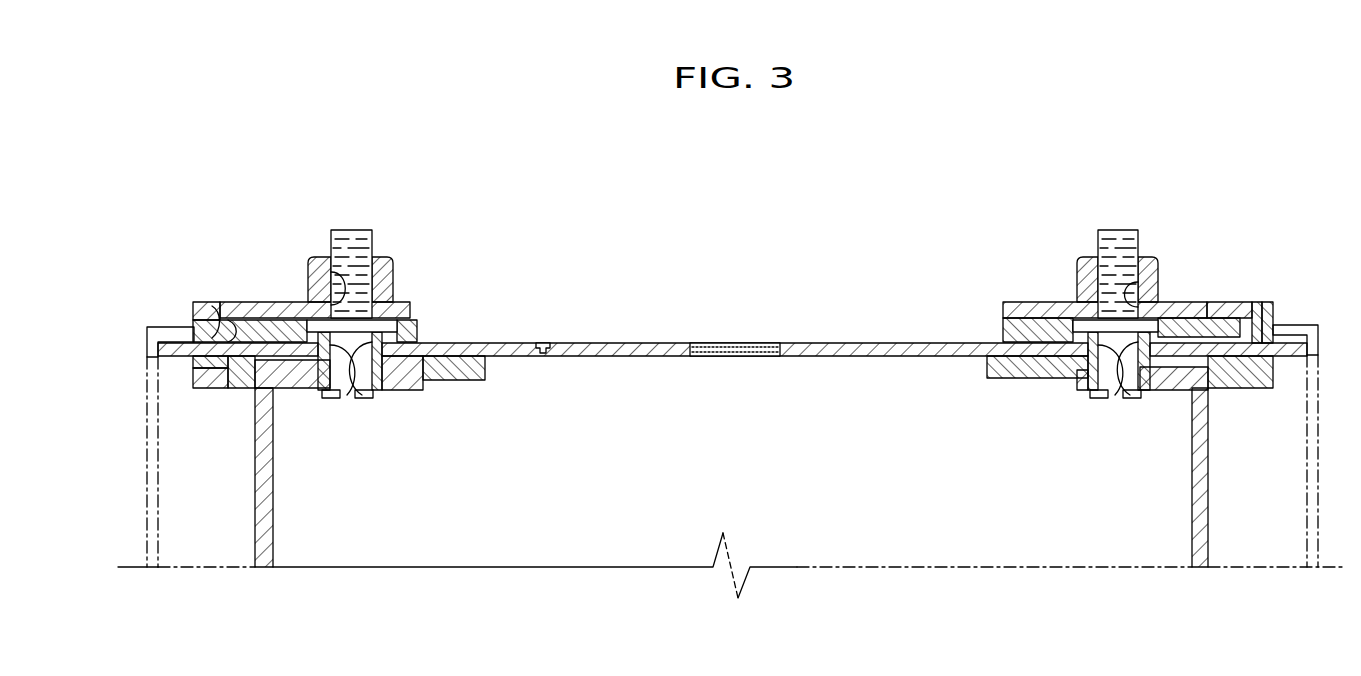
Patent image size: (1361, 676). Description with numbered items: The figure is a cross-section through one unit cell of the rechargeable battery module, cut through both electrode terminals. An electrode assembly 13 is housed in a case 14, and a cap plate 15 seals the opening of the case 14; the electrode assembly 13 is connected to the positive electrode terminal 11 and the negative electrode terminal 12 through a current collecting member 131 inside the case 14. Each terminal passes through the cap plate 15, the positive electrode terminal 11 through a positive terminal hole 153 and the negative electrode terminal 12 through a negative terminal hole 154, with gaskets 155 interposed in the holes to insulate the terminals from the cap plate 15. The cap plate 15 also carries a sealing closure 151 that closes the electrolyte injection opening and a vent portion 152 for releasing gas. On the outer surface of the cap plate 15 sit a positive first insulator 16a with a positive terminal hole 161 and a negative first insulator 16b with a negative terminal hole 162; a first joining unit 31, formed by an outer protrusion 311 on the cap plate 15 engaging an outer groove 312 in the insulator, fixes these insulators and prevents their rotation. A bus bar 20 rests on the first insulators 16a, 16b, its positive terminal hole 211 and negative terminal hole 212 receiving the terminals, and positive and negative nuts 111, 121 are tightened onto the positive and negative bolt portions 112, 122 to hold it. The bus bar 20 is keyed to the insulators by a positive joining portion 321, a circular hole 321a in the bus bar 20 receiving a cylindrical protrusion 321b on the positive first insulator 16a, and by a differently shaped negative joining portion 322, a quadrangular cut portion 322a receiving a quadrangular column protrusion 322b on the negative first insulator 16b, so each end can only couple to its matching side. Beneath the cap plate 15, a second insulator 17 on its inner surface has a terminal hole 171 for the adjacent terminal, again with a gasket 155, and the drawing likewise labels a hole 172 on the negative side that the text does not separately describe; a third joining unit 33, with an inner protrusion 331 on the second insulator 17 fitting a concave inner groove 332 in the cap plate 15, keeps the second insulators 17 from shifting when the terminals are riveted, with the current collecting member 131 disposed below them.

The positive electrode terminal 11 is at (363, 233).
The negative electrode terminal 12 is at (1110, 233).
The electrode assembly 13 is at (730, 504).
The case 14 is at (147, 493).
The cap plate 15 is at (732, 322).
The positive first insulator 16a is at (417, 333).
The negative first insulator 16b is at (1207, 302).
The second insulator 17 is at (237, 388).
The bus bar 20 is at (410, 312).
The first joining unit 31 is at (138, 331).
The third joining unit 33 is at (142, 390).
The positive nut 111 is at (393, 278).
The positive bolt portion 112 is at (372, 240).
The negative nut 121 is at (1080, 278).
The negative bolt portion 122 is at (1100, 240).
The current collecting member 131 is at (262, 510).
The sealing closure 151 is at (545, 343).
The vent portion 152 is at (737, 343).
The positive terminal hole 153 is at (340, 398).
The negative terminal hole 154 is at (1100, 363).
The gasket 155 is at (405, 385).
The positive terminal hole 161 is at (358, 417).
The negative terminal hole 162 is at (1045, 386).
The terminal hole 171 is at (326, 393).
The second engaging projection 172 is at (1078, 386).
The positive terminal hole 211 is at (333, 290).
The negative terminal hole 212 is at (1138, 296).
The outer protrusion 311 is at (194, 306).
The outer groove 312 is at (144, 347).
The positive joining portion 321 is at (218, 261).
The circular hole 321a is at (215, 310).
The cylindrical protrusion 321b is at (250, 308).
The negative joining portion 322 is at (1286, 282).
The quadrangular cut portion 322a is at (1263, 303).
The quadrangular column protrusion 322b is at (1273, 313).
The inner protrusion 331 is at (222, 382).
The inner groove 332 is at (222, 367).